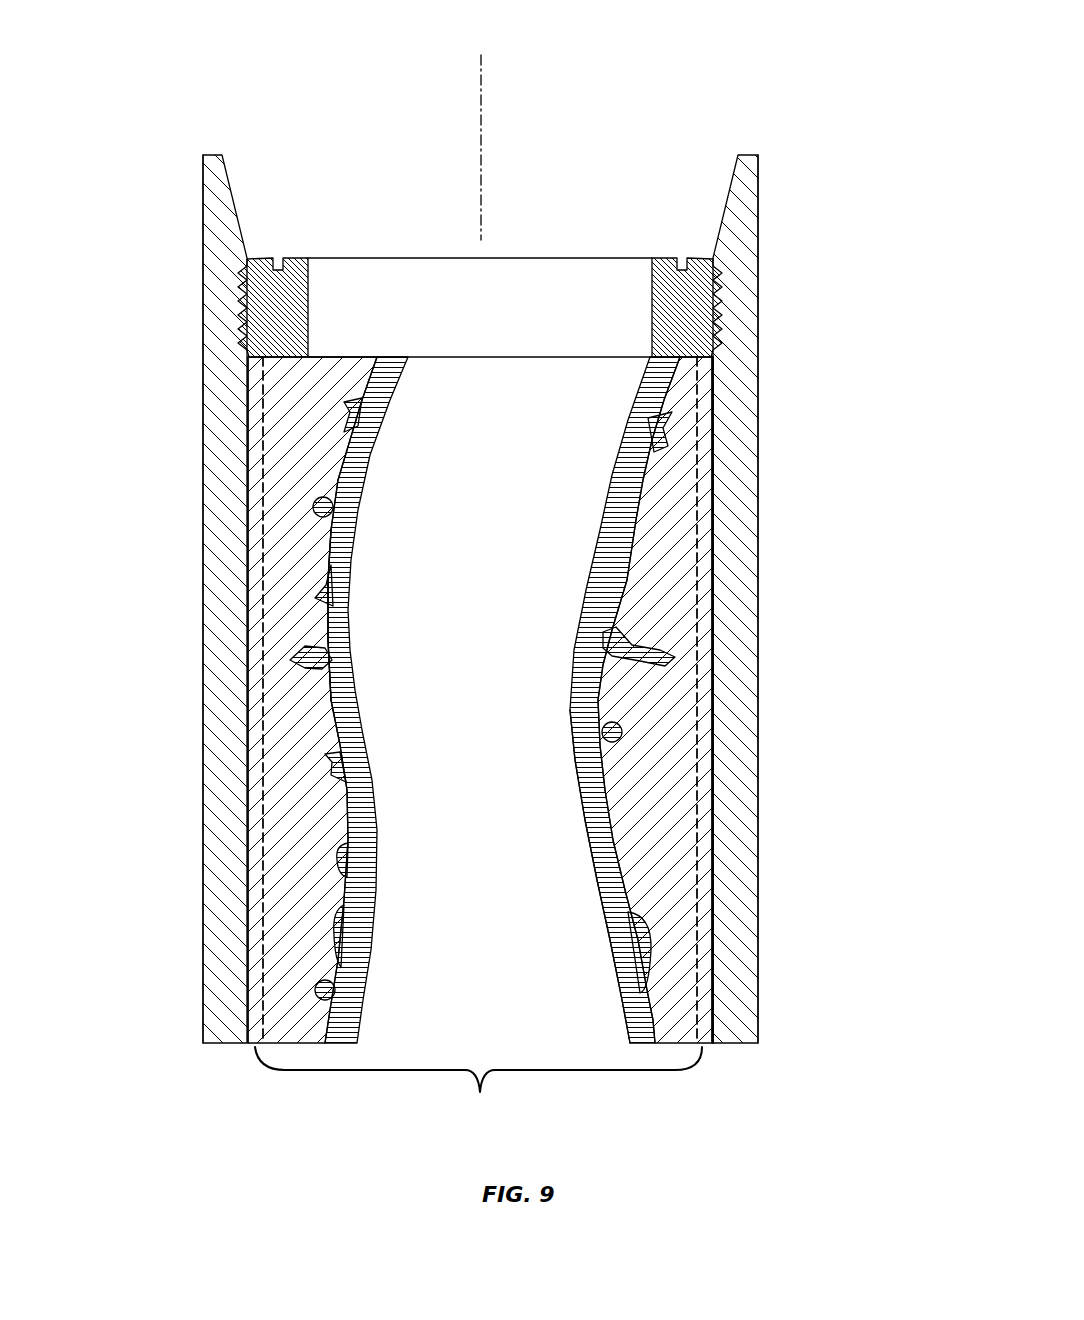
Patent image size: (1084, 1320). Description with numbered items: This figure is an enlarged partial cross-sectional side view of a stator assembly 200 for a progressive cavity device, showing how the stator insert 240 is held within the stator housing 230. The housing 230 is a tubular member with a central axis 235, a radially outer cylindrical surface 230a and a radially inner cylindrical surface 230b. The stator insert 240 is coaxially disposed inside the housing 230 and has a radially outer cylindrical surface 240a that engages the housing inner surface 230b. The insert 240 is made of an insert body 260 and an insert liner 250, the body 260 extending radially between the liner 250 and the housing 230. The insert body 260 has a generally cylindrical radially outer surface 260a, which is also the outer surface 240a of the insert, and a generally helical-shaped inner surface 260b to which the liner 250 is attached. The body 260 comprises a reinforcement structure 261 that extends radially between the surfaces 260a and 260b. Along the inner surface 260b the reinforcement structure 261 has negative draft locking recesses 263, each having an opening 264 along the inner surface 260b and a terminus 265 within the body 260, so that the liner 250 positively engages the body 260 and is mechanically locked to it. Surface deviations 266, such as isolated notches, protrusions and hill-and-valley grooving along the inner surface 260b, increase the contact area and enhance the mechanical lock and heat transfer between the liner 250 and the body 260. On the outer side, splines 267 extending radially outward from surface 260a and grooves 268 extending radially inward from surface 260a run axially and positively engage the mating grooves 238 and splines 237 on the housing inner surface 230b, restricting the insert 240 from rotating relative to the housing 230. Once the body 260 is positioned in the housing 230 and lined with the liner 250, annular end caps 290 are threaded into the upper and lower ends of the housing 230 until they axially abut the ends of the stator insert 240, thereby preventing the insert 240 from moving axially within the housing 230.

The housing assembly 200 is at (230, 46).
The stator housing 230 is at (752, 436).
The radially outer cylindrical surface 230a is at (765, 382).
The radially inner cylindrical surface 230b is at (721, 571).
The central axis 235 is at (486, 140).
The splines 237 is at (700, 992).
The grooves 238 is at (195, 700).
The stator insert 240 is at (478, 1087).
The radially outer cylindrical surface 240a is at (807, 700).
The insert liner 250 is at (372, 812).
The insert body 260 is at (686, 820).
The radially outer surface 260a is at (835, 700).
The inner surface 260b is at (596, 843).
The reinforcement structure 261 is at (563, 700).
The recesses 263 is at (328, 668).
The opening 264 is at (340, 655).
The terminus 265 is at (300, 653).
The surface deviations 266 is at (345, 868).
The splines 267 is at (255, 905).
The grooves 268 is at (794, 700).
The end caps 290 is at (300, 258).